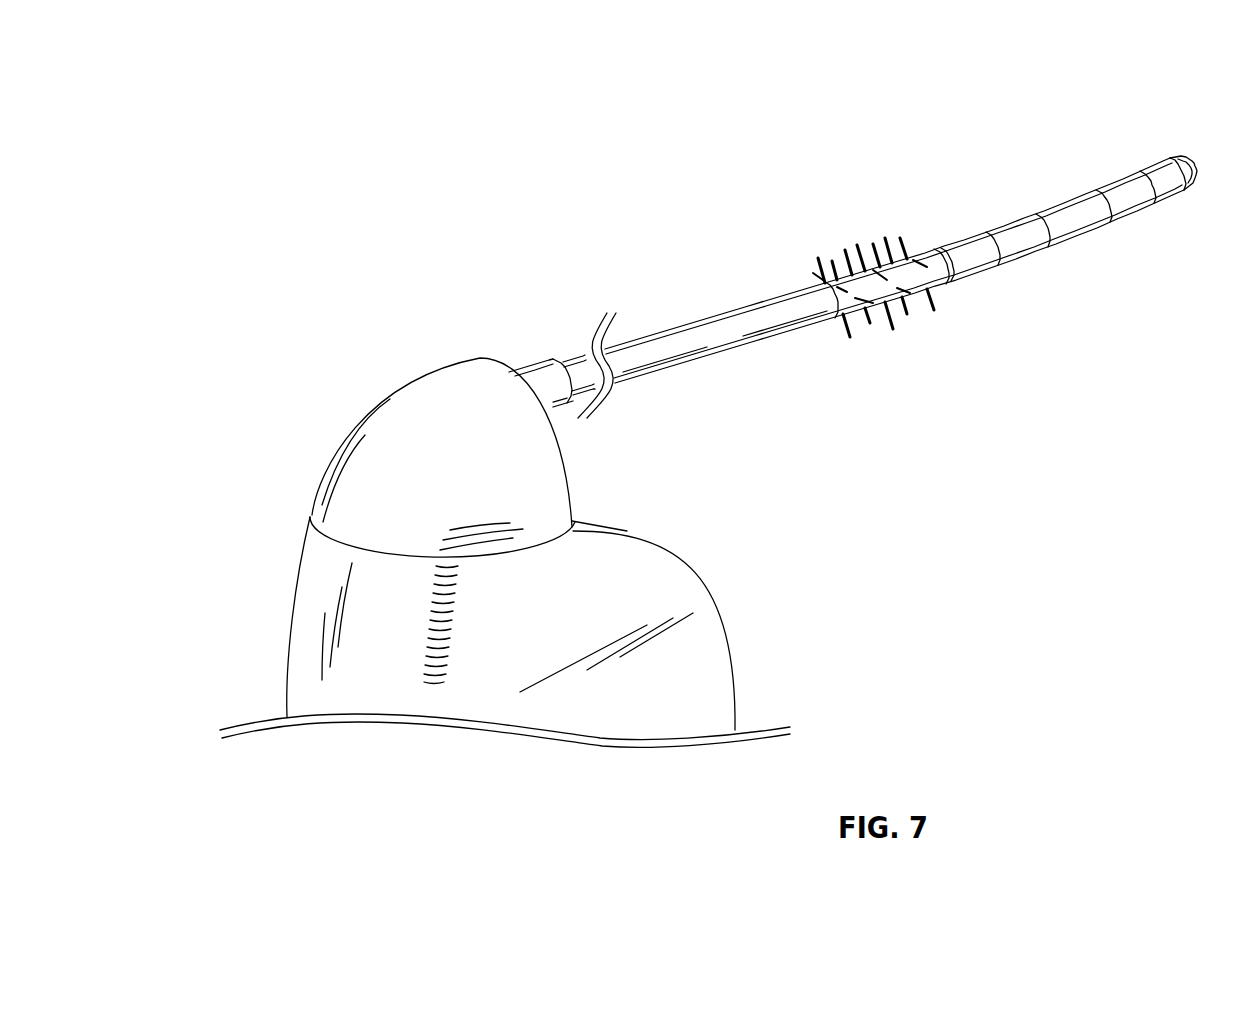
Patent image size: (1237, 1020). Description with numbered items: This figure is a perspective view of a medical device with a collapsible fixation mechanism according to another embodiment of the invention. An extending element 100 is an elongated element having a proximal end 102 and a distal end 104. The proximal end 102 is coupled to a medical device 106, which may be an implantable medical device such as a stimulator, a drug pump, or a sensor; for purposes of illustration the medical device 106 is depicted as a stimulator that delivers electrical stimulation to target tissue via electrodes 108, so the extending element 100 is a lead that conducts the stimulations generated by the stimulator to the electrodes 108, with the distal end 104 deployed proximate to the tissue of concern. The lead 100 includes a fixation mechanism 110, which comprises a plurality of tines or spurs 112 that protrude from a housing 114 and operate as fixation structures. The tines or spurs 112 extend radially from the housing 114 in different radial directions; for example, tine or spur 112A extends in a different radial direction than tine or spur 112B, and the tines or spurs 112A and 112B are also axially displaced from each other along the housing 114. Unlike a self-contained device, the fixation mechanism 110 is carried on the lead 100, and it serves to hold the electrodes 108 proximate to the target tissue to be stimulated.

The extending element 100 is at (597, 172).
The proximal end 102 is at (580, 350).
The distal end 104 is at (1160, 167).
The medical device 106 is at (468, 395).
The electrodes 108 is at (1013, 258).
The fixation mechanism 110 is at (1059, 186).
The tines or spurs 112 is at (856, 325).
The tine or spur 112A is at (823, 266).
The tine or spur 112B is at (903, 250).
The housing 114 is at (933, 285).